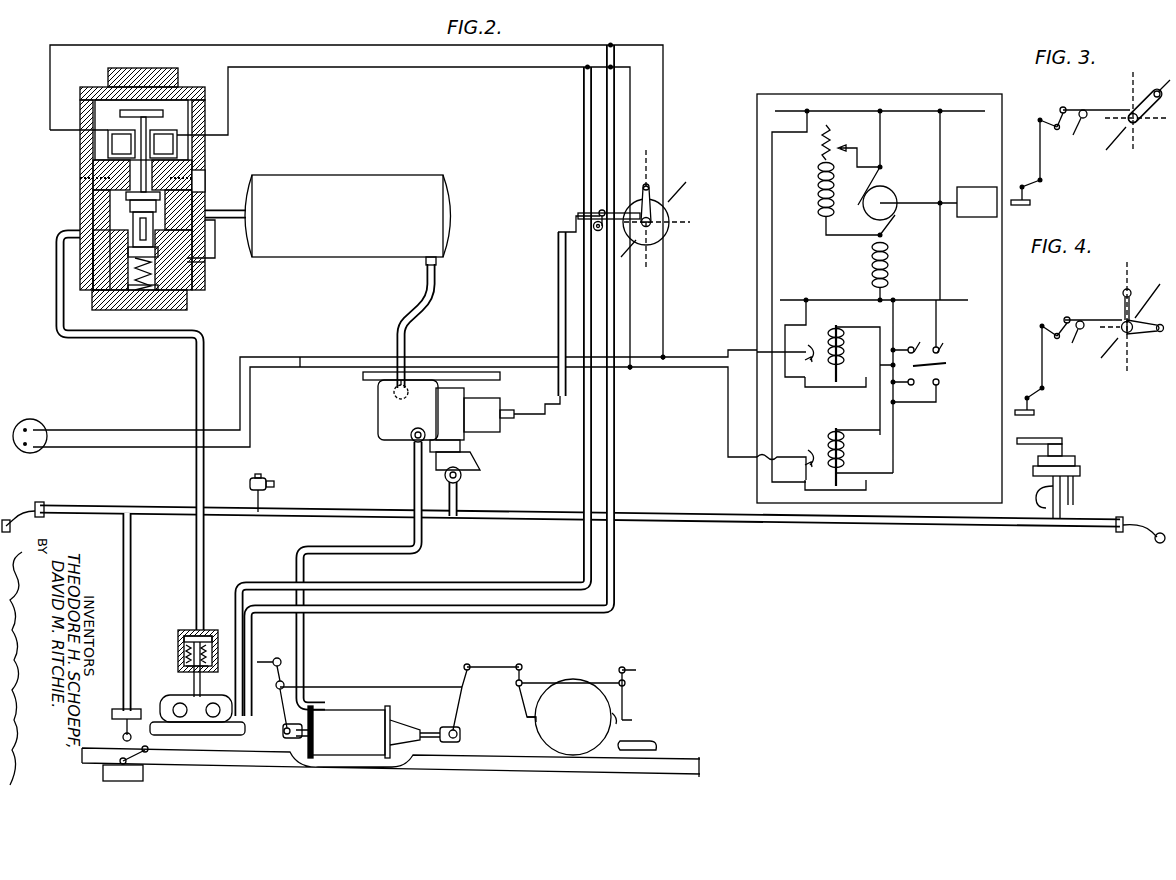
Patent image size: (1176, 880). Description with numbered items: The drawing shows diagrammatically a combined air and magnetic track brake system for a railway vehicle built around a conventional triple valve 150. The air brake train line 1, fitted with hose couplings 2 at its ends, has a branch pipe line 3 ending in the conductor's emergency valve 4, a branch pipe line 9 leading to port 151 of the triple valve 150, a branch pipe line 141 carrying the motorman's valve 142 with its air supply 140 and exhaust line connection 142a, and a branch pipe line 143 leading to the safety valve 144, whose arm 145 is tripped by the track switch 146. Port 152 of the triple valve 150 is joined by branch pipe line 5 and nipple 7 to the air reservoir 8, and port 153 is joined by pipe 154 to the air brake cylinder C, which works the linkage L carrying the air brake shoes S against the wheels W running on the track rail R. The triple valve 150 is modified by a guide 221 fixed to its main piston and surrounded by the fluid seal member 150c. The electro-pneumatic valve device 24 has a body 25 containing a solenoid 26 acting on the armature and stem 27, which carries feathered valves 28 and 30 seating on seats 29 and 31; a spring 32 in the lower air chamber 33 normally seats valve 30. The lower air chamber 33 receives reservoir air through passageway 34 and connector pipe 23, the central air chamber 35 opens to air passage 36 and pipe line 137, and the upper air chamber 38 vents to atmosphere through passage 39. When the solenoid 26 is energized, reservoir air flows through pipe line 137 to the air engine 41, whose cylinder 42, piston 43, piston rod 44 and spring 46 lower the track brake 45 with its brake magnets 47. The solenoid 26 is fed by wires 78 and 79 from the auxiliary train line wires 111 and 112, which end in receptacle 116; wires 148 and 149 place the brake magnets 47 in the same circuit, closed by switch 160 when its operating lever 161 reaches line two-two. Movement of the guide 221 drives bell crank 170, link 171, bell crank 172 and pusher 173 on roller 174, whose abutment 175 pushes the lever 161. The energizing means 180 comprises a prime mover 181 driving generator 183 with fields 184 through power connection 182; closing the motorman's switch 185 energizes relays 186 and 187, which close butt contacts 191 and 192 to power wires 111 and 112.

In FIG. 2, the air brake train line 1 is at (636, 513).
In FIG. 2, the hose coupling 2 is at (20, 512).
In FIG. 2, the branch pipe line 3 is at (256, 496).
In FIG. 2, the conductor's emergency valve 4 is at (252, 482).
In FIG. 2, the branch pipe line 5 is at (398, 310).
In FIG. 2, the nipple 7 is at (437, 264).
In FIG. 2, the air reservoir 8 is at (372, 176).
In FIG. 2, the branch pipe line 9 is at (458, 487).
In FIG. 2, the connector pipe 23 is at (226, 210).
In FIG. 2, the electro-pneumatic valve device 24 is at (192, 90).
In FIG. 2, the body 25 is at (208, 182).
In FIG. 2, the solenoid 26 is at (108, 143).
In FIG. 2, the armature and stem 27 is at (182, 128).
In FIG. 2, the feathered valve 28 is at (93, 183).
In FIG. 2, the seat 29 is at (93, 202).
In FIG. 2, the feathered valve 30 is at (135, 240).
In FIG. 2, the seat 31 is at (196, 266).
In FIG. 2, the spring 32 is at (140, 300).
In FIG. 2, the lower air chamber 33 is at (150, 296).
In FIG. 2, the passageway 34 is at (196, 245).
In FIG. 2, the central air chamber 35 is at (130, 224).
In FIG. 2, the air passage 36 is at (93, 210).
In FIG. 2, the upper air chamber 38 is at (126, 190).
In FIG. 2, the passage 39 is at (93, 178).
In FIG. 2, the air engine 41 is at (180, 629).
In FIG. 2, the cylinder 42 is at (184, 652).
In FIG. 2, the piston 43 is at (180, 635).
In FIG. 2, the piston rod 44 is at (194, 684).
In FIG. 2, the track brake 45 is at (634, 752).
In FIG. 2, the spring 46 is at (186, 669).
In FIG. 2, the brake magnets 47 is at (178, 706).
In FIG. 2, the wire 78 is at (399, 46).
In FIG. 2, the wire 79 is at (410, 68).
In FIG. 2, the wire 111 is at (298, 364).
In FIG. 2, the wire 112 is at (297, 355).
In FIG. 2, the receptacle 116 is at (41, 424).
In FIG. 2, the pipe line 137 is at (196, 371).
In FIG. 2, the air supply 140 is at (1040, 498).
In FIG. 2, the branch pipe line 141 is at (1053, 508).
In FIG. 2, the motorman's valve 142 is at (1063, 448).
In FIG. 2, the exhaust line connection 142a is at (1074, 490).
In FIG. 2, the branch pipe line 143 is at (131, 535).
In FIG. 2, the safety valve 144 is at (114, 709).
In FIG. 2, the arm 145 is at (120, 731).
In FIG. 2, the track switch 146 is at (143, 768).
In FIG. 2, the wire 148 is at (614, 438).
In FIG. 2, the wire 149 is at (583, 441).
In FIG. 2, the triple valve 150 is at (380, 421).
In FIG. 2, the fluid seal member 150c is at (483, 420).
In FIG. 2, the port 151 is at (472, 468).
In FIG. 2, the port 152 is at (393, 397).
In FIG. 2, the port 153 is at (410, 438).
In FIG. 2, the pipe 154 is at (412, 489).
In FIG. 2, the switch 160 is at (666, 241).
In FIG. 2, the operating lever 161 is at (649, 186).
In FIG. 3, the operating lever 161 is at (1150, 92).
In FIG. 4, the operating lever 161 is at (1129, 317).
In FIG. 2, the bell crank 170 is at (556, 393).
In FIG. 3, the bell crank 170 is at (1042, 192).
In FIG. 4, the bell crank 170 is at (1038, 398).
In FIG. 3, the link 171 is at (1041, 160).
In FIG. 4, the link 171 is at (1043, 366).
In FIG. 2, the bell crank 172 is at (560, 227).
In FIG. 3, the bell crank 172 is at (1055, 117).
In FIG. 4, the bell crank 172 is at (1055, 324).
In FIG. 2, the pusher 173 is at (592, 212).
In FIG. 3, the pusher 173 is at (1075, 108).
In FIG. 4, the pusher 173 is at (1073, 318).
In FIG. 2, the roller 174 is at (594, 229).
In FIG. 3, the roller 174 is at (1076, 130).
In FIG. 4, the roller 174 is at (1072, 338).
In FIG. 2, the abutment 175 is at (622, 212).
In FIG. 3, the abutment 175 is at (1125, 110).
In FIG. 4, the abutment 175 is at (1122, 318).
In FIG. 2, the energizing means 180 is at (866, 97).
In FIG. 2, the prime mover 181 is at (964, 217).
In FIG. 2, the power connection 182 is at (914, 206).
In FIG. 2, the generator 183 is at (889, 195).
In FIG. 2, the fields 184 is at (820, 224).
In FIG. 2, the motorman's switch 185 is at (946, 359).
In FIG. 2, the relay 186 is at (841, 345).
In FIG. 2, the relay 187 is at (845, 455).
In FIG. 2, the butt contact 191 is at (804, 343).
In FIG. 2, the butt contact 192 is at (804, 449).
In FIG. 2, the guide 221 is at (520, 416).
In FIG. 3, the guide 221 is at (1022, 207).
In FIG. 4, the guide 221 is at (1028, 414).
In FIG. 2, the air brake cylinder C is at (340, 716).
In FIG. 2, the linkage L is at (508, 698).
In FIG. 2, the air brake shoes S is at (522, 728).
In FIG. 2, the wheels W is at (586, 686).
In FIG. 2, the track rail R is at (487, 770).